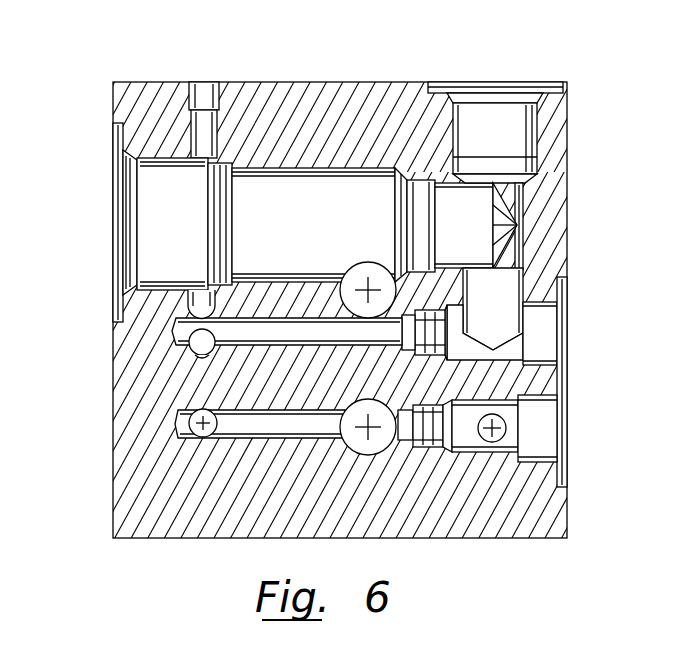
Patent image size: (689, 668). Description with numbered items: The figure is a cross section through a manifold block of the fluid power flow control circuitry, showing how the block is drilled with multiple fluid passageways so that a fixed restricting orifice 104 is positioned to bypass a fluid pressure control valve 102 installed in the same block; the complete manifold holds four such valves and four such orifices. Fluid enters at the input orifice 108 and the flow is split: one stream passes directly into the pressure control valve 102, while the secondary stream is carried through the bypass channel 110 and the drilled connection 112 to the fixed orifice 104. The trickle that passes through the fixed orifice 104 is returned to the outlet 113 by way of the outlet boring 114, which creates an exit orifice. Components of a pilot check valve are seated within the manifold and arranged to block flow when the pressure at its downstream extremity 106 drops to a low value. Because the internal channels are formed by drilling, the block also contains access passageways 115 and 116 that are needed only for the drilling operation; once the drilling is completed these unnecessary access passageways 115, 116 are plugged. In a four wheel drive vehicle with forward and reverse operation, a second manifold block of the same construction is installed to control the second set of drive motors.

The fluid pressure control valve 102 is at (321, 220).
The restricting orifice 104 is at (558, 357).
The downstream extremity 106 is at (520, 224).
The orifice 108 is at (118, 206).
The bypass channel 110 is at (287, 331).
The drilled connection 112 is at (188, 305).
The outlet 113 is at (500, 92).
The outlet boring 114 is at (502, 323).
The access passageway 115 is at (558, 309).
The access passageway 116 is at (207, 88).